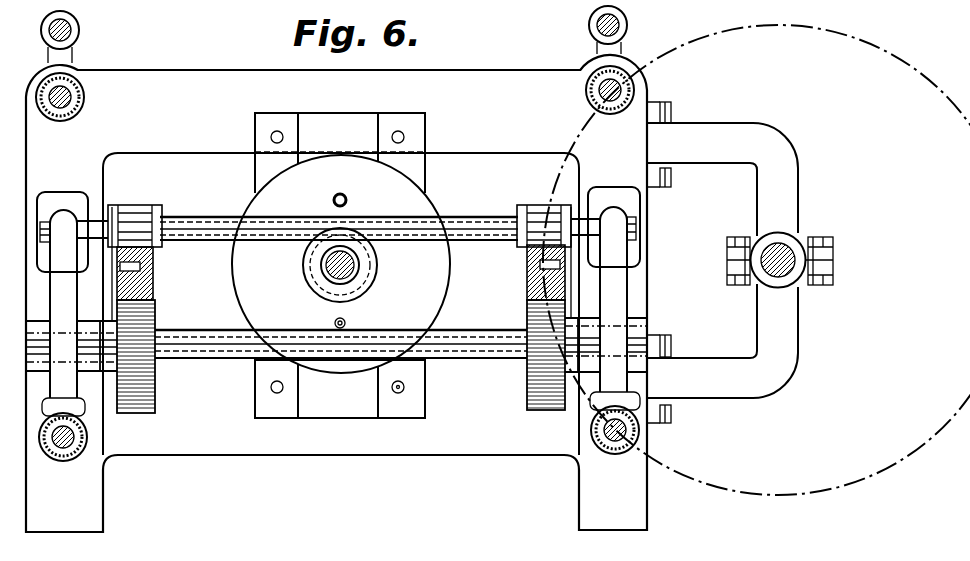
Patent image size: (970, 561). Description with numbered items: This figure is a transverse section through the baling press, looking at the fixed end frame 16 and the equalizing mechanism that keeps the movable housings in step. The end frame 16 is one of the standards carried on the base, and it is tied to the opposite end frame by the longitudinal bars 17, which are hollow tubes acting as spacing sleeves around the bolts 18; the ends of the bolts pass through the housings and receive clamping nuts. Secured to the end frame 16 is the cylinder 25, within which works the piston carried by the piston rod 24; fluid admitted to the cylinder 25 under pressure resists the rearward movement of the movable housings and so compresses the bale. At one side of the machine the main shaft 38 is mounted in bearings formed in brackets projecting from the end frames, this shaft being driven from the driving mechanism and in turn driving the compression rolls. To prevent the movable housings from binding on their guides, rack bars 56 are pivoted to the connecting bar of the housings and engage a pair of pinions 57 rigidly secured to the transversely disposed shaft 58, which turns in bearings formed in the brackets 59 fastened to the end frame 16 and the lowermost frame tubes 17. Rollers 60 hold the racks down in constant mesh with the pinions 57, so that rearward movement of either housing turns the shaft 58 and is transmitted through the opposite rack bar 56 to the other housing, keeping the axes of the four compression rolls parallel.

The end frame 16 is at (336, 293).
The longitudinal bar 17 is at (58, 120).
The bolt 18 is at (78, 95).
The piston rod 24 is at (328, 258).
The cylinder 25 is at (341, 264).
The main shaft 38 is at (781, 277).
The rack bar 56 is at (152, 263).
The pinion 57 is at (143, 330).
The transversely disposed shaft 58 is at (280, 337).
The bracket 59 is at (70, 372).
The roller 60 is at (131, 215).